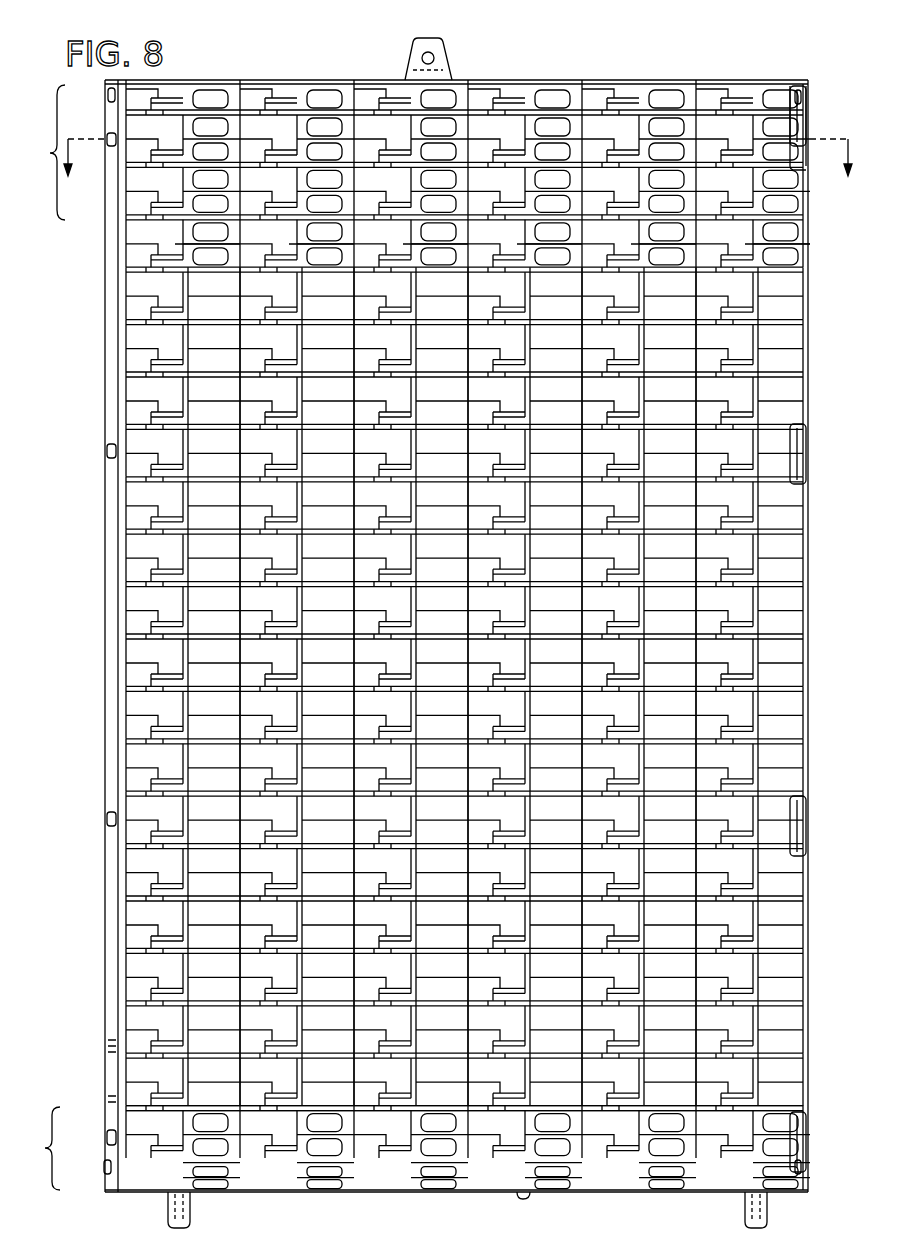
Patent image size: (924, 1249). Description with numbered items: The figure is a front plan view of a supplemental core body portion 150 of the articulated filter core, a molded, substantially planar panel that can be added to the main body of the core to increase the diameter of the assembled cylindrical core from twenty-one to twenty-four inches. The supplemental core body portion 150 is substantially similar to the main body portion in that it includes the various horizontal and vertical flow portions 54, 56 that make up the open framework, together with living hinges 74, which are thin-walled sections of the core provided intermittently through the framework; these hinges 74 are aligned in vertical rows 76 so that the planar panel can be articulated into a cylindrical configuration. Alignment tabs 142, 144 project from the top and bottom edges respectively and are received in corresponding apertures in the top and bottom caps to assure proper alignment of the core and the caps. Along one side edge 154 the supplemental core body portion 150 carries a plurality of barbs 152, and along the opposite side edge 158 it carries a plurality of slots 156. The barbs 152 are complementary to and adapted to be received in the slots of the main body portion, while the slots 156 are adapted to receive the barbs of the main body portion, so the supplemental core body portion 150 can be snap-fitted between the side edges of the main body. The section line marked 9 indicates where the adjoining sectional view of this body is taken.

The grid panel 150 is at (604, 68).
The top connector band 54 is at (415, 173).
The bottom connector band 56 is at (411, 1147).
The top edge rail 76 is at (272, 80).
The left side rail 154 is at (108, 958).
The side rail clips 152 is at (108, 451).
The right side rail 158 is at (810, 1000).
The right rail clips 156 is at (808, 120).
The top mounting tab 142 is at (447, 52).
The bottom mounting tabs 144 is at (190, 1224).
The bottom connectors 74 is at (380, 1192).
The section line 9- 9 is at (465, 157).